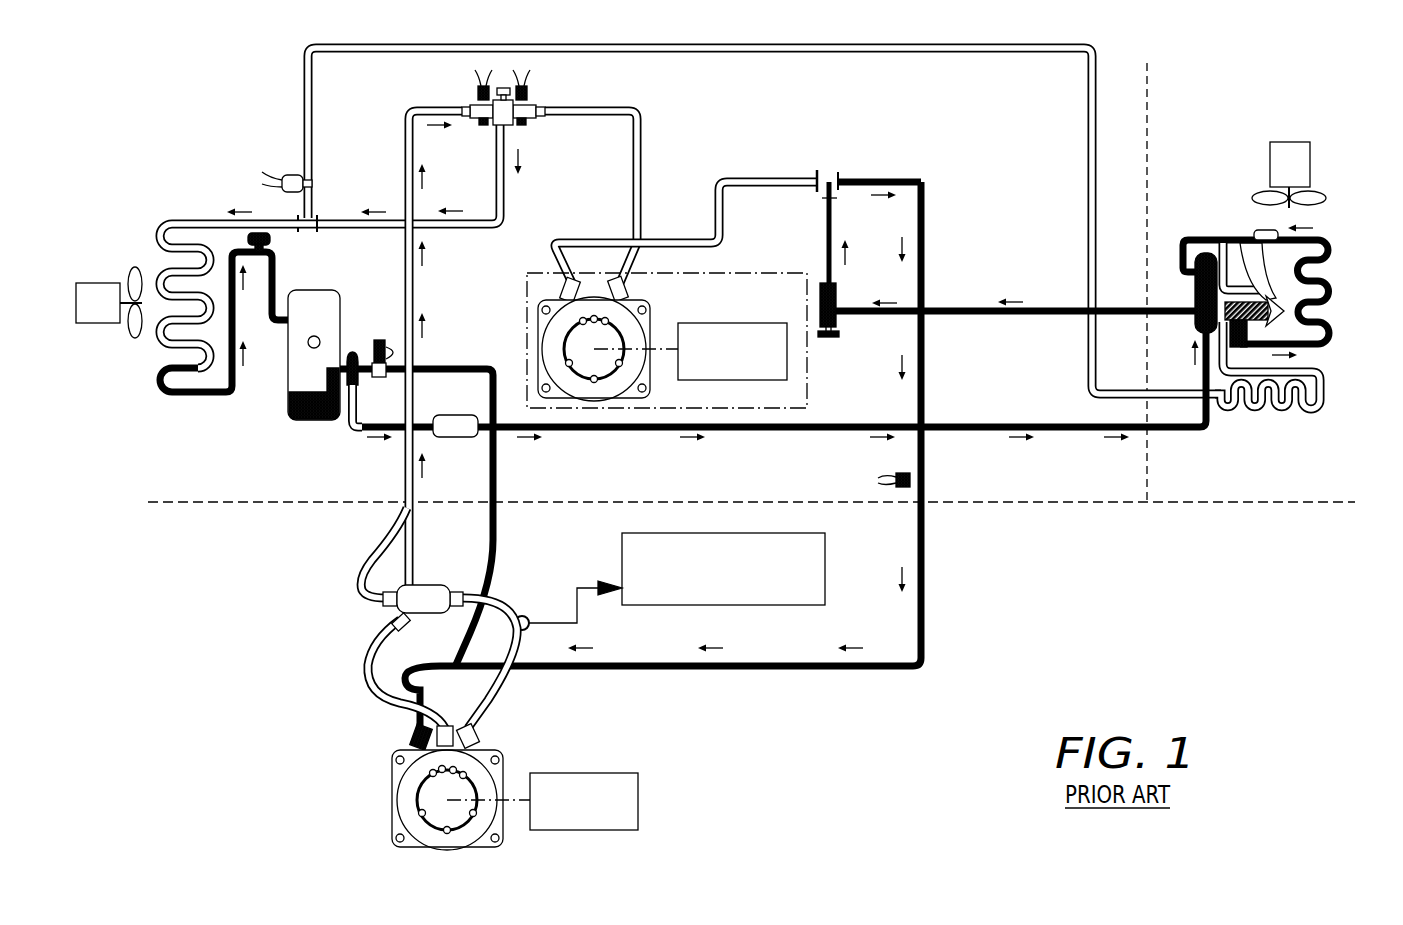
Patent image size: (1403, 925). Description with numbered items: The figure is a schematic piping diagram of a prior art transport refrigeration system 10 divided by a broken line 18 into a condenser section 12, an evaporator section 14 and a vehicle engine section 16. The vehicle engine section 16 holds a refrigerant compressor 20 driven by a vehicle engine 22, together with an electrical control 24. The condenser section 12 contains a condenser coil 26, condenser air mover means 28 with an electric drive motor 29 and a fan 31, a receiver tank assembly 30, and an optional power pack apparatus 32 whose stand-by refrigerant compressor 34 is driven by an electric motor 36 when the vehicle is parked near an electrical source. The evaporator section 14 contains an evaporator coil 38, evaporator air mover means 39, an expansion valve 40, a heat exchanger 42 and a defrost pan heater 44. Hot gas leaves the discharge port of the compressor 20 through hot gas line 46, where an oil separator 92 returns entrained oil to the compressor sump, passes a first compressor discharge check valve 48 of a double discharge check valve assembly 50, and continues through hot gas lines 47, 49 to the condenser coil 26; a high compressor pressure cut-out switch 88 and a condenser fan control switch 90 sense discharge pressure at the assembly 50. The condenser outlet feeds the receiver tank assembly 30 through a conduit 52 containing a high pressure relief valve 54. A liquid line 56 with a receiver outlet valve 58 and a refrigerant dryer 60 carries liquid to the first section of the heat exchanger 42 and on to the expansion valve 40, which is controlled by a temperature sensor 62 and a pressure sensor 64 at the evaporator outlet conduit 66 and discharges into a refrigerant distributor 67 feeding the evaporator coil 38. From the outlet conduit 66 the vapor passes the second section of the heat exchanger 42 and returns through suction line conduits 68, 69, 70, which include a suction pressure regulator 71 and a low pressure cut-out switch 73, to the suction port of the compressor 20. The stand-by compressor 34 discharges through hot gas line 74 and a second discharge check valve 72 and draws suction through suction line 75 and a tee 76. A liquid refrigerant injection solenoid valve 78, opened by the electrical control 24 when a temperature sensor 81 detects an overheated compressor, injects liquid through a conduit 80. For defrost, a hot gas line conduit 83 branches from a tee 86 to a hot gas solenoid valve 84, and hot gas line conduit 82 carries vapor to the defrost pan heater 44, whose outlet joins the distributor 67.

The transport refrigeration system 10 is at (687, 30).
The condenser section 12 is at (219, 470).
The evaporator section 14 is at (1277, 462).
The vehicle engine section 16 is at (284, 740).
The broken line 18 is at (1145, 462).
The refrigerant compressor 20 is at (392, 792).
The vehicle engine 22 is at (640, 795).
The electrical control 24 is at (827, 556).
The condenser coil 26 is at (157, 360).
The condenser air mover means 28 is at (88, 285).
The electric drive motor 29 is at (77, 287).
The receiver tank assembly 30 is at (338, 300).
The fan 31 is at (132, 270).
The power pack apparatus 32 is at (667, 312).
The stand-by refrigerant compressor 34 is at (647, 320).
The electric motor 36 is at (753, 323).
The evaporator coil 38 is at (1334, 245).
The evaporator air mover means 39 is at (1285, 142).
The expansion valve 40 is at (1269, 300).
The heat exchanger 42 is at (1195, 285).
The defrost pan heater 44 is at (1297, 412).
The hot gas line 46 is at (415, 288).
The hot gas line 47 is at (507, 192).
The first compressor discharge check valve 48 is at (473, 113).
The hot gas line 49 is at (270, 218).
The double discharge check valve assembly 50 is at (514, 109).
The conduit 52 is at (236, 390).
The high pressure relief valve 54 is at (270, 240).
The liquid line 56 is at (1003, 423).
The receiver outlet valve 58 is at (370, 381).
The refrigerant dryer 60 is at (447, 437).
The temperature sensor 62 is at (1258, 230).
The pressure sensor 64 is at (1243, 237).
The outlet conduit 66 is at (1187, 237).
The refrigerant distributor 67 is at (1238, 347).
The suction line conduit 68 is at (1058, 307).
The suction line conduit 69 is at (833, 215).
The suction line conduit 70 is at (928, 557).
The suction pressure regulator 71 is at (836, 300).
The second discharge check valve 72 is at (530, 120).
The low pressure cut-out switch 73 is at (900, 472).
The hot gas line 74 is at (642, 137).
The suction line 75 is at (680, 243).
The tee 76 is at (820, 170).
The liquid refrigerant injection solenoid valve 78 is at (373, 345).
The conduit 80 is at (497, 562).
The temperature sensor 81 is at (527, 617).
The hot gas line conduit 82 is at (940, 53).
The hot gas line conduit 83 is at (288, 161).
The hot gas solenoid valve 84 is at (283, 175).
The tee 86 is at (317, 222).
The high compressor pressure cut-out switch 88 is at (477, 88).
The condenser fan control switch 90 is at (528, 88).
The oil separator 92 is at (434, 584).